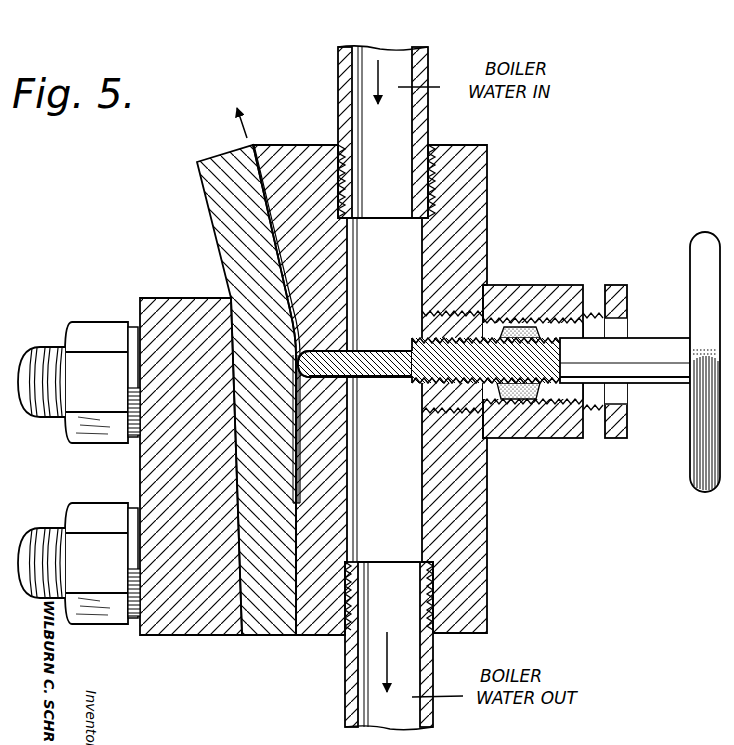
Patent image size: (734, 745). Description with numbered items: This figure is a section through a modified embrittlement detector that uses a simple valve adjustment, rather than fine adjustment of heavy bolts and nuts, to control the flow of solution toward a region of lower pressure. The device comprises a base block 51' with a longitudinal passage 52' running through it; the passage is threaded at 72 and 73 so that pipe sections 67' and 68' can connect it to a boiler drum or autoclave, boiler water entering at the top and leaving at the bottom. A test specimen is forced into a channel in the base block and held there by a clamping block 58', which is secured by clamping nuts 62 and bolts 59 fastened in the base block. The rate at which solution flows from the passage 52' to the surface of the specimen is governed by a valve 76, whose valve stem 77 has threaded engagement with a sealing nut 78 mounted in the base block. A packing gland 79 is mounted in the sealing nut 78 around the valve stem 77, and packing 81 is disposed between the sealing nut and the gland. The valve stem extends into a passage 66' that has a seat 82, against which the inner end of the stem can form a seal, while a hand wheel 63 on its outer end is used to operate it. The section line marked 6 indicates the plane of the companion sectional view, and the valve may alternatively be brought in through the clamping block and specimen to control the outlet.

The section line / wedge 6 is at (392, 262).
The base block 51' is at (396, 390).
The longitudinal passage 52' is at (387, 390).
The clamping block 58' is at (157, 459).
The bolts 59 is at (55, 538).
The clamping nuts 62 is at (93, 513).
The handle 63 is at (698, 488).
The passage 66' is at (355, 352).
The pipe section 67' is at (356, 132).
The pipe section 68' is at (361, 646).
The threaded portion 72 is at (345, 597).
The threaded portion 73 is at (350, 187).
The valve 76 is at (680, 425).
The valve stem 77 is at (388, 367).
The sealing nut 78 is at (567, 434).
The packing gland 79 is at (617, 434).
The packing 81 is at (523, 408).
The seat 82 is at (307, 337).